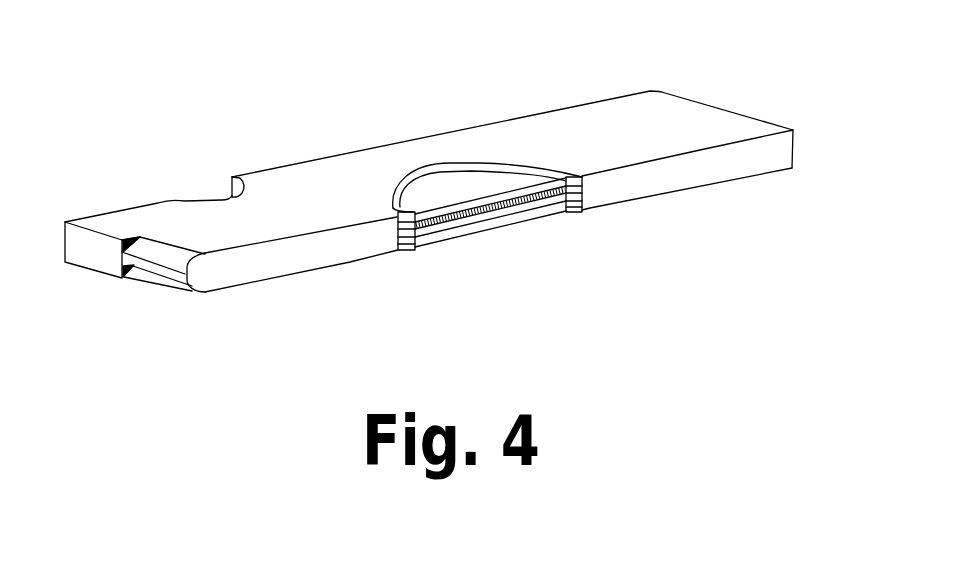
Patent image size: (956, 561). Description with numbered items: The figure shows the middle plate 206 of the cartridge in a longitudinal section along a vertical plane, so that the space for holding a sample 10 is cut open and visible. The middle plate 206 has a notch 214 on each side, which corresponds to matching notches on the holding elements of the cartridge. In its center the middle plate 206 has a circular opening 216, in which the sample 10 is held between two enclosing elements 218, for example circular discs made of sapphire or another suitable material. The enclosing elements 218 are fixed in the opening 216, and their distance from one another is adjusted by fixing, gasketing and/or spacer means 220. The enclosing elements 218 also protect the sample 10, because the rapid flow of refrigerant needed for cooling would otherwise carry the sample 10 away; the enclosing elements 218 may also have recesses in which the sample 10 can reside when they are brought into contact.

The sample 10 is at (477, 220).
The middle plate 206 is at (698, 200).
The notch 214 is at (203, 193).
The circular opening 216 is at (427, 162).
The enclosing elements 218 is at (452, 212).
The fixing, gasketing and/or spacer means 220 is at (583, 181).